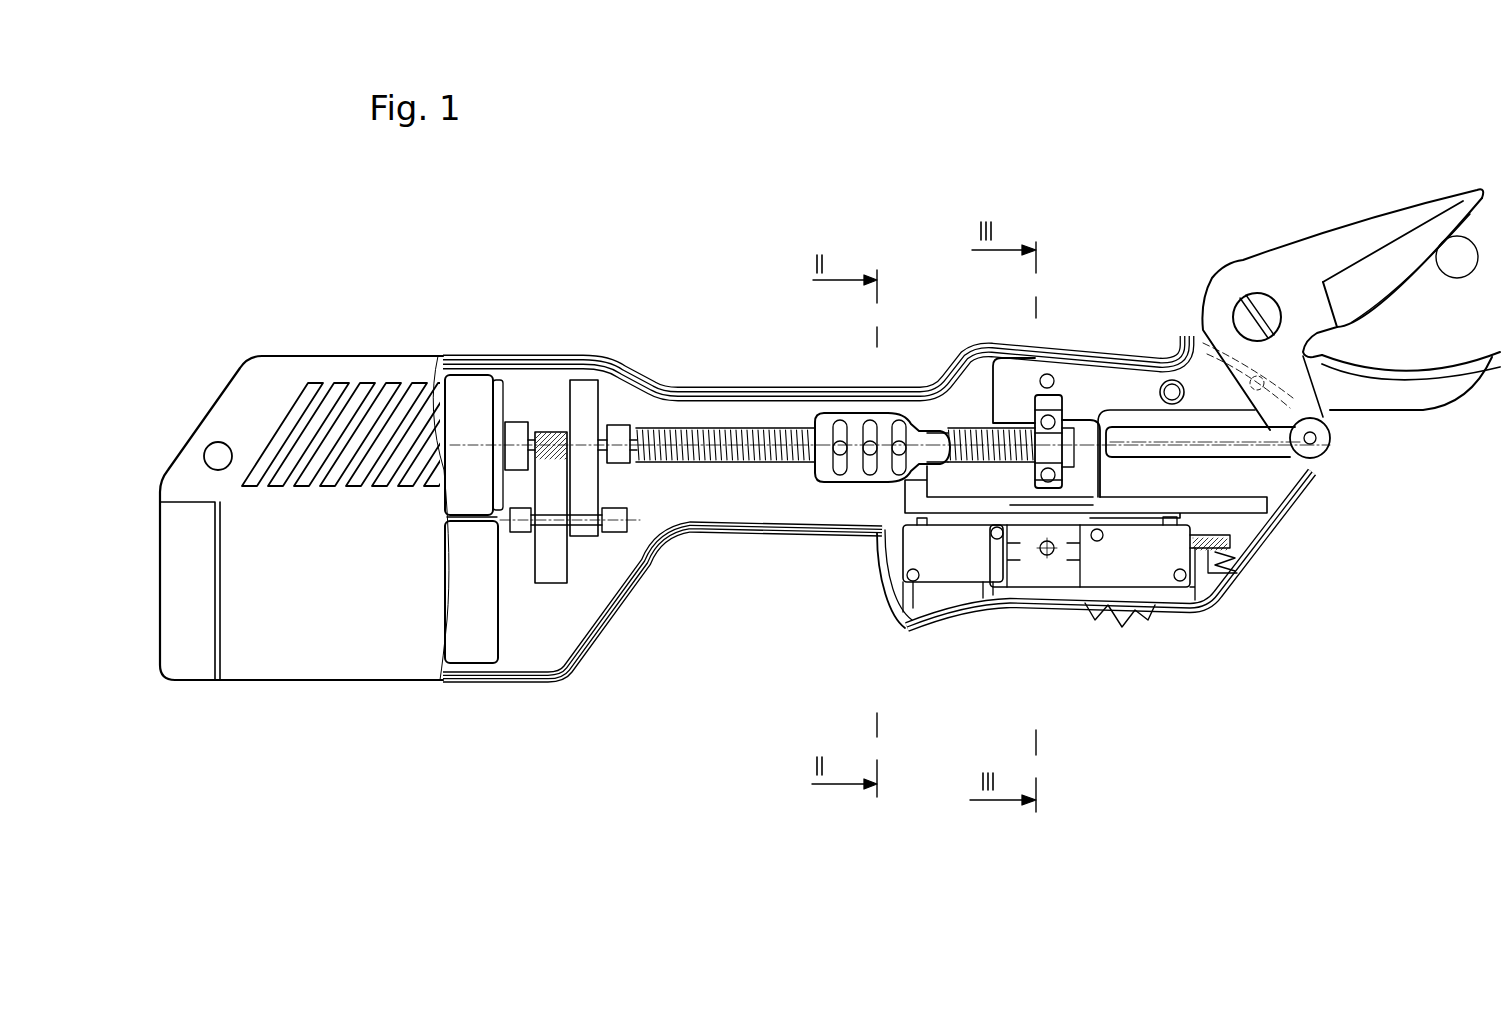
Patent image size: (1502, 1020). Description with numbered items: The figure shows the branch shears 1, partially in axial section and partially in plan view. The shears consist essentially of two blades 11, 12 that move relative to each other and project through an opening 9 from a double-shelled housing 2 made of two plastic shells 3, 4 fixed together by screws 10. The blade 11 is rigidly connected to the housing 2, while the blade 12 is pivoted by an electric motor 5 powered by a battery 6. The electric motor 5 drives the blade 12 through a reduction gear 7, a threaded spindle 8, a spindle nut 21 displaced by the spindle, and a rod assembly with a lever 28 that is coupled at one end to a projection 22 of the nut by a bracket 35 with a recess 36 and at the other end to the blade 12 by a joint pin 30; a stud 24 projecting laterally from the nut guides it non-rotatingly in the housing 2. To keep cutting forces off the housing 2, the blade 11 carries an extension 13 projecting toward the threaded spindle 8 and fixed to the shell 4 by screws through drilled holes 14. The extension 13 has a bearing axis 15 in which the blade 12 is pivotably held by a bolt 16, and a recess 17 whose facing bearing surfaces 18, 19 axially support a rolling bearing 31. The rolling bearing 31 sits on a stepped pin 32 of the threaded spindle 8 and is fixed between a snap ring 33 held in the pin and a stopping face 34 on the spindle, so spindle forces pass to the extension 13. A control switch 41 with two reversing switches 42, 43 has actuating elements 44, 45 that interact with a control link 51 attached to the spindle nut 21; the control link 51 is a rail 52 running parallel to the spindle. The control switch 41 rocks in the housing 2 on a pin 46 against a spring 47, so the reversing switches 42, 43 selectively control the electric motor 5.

The branch shears 1 is at (760, 695).
The housing 2 is at (740, 538).
The plastic shell 3 is at (386, 655).
The plastic shell 4 is at (718, 388).
The electric motor 5 is at (466, 375).
The battery 6 is at (506, 638).
The reduction gear 7 is at (555, 345).
The threaded spindle 8 is at (682, 425).
The opening 9 is at (1247, 458).
The screws 10 is at (213, 443).
The blade 11 is at (1477, 352).
The blade 12 is at (1427, 275).
The extension 13 is at (990, 395).
The drilled holes 14 is at (1047, 374).
The bearing axis 15 is at (1303, 277).
The bolt 16 is at (1260, 305).
The recess 17 is at (1060, 405).
The bearing surface 18 is at (1040, 407).
The bearing surface 19 is at (1065, 425).
The spindle nut 21 is at (871, 460).
The projection 22 is at (840, 455).
The stud 24 is at (790, 535).
The lever 28 is at (935, 437).
The joint pin 30 is at (1320, 438).
The rolling bearing 31 is at (1008, 515).
The stepped pin 32 is at (1062, 485).
The snap ring 33 is at (1120, 628).
The stopping face 34 is at (1033, 485).
The bracket 35 is at (840, 420).
The recess 36 is at (872, 425).
The control switch 41 is at (890, 614).
The reversing switch 42 is at (936, 582).
The reversing switch 43 is at (1160, 588).
The actuating element 44 is at (885, 490).
The actuating element 45 is at (1250, 548).
The pin 46 is at (1049, 556).
The spring 47 is at (1237, 565).
The control link 51 is at (937, 563).
The rail 52 is at (1245, 505).